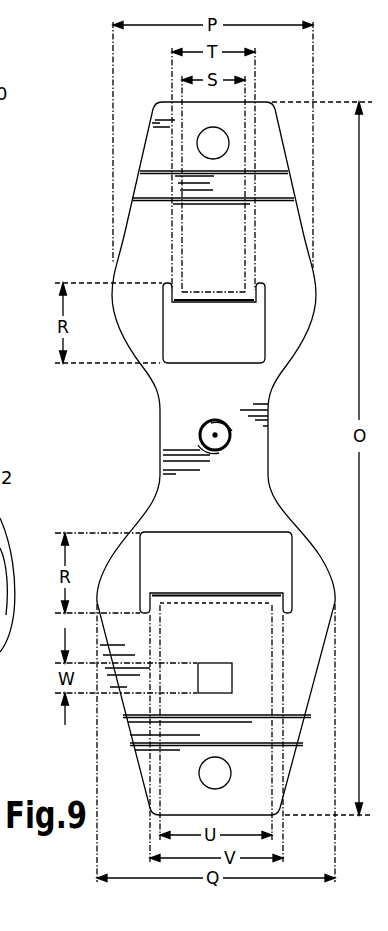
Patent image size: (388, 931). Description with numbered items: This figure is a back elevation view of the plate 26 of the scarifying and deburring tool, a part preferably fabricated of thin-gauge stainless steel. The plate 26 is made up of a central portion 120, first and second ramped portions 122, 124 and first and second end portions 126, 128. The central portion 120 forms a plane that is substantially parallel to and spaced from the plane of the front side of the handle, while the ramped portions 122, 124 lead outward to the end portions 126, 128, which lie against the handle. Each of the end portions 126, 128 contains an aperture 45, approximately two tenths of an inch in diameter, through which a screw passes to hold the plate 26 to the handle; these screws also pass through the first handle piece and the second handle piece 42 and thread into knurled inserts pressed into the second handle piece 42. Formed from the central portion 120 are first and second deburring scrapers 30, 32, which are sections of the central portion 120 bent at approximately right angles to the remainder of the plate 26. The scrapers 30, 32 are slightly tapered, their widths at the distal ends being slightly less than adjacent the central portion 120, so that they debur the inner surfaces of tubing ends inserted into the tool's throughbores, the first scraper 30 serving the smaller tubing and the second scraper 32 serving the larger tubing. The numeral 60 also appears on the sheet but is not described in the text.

The plate 26 is at (99, 417).
The first deburring scraper 30 is at (222, 299).
The second deburring scraper 32 is at (232, 592).
The second handle piece 42 is at (4, 386).
The apertures 45 is at (219, 137).
The adjacent figure element 60 is at (8, 215).
The central portion 120 is at (275, 240).
The first ramped portion 122 is at (176, 185).
The second ramped portion 124 is at (150, 729).
The first end portion 126 is at (268, 131).
The second end portion 128 is at (255, 757).